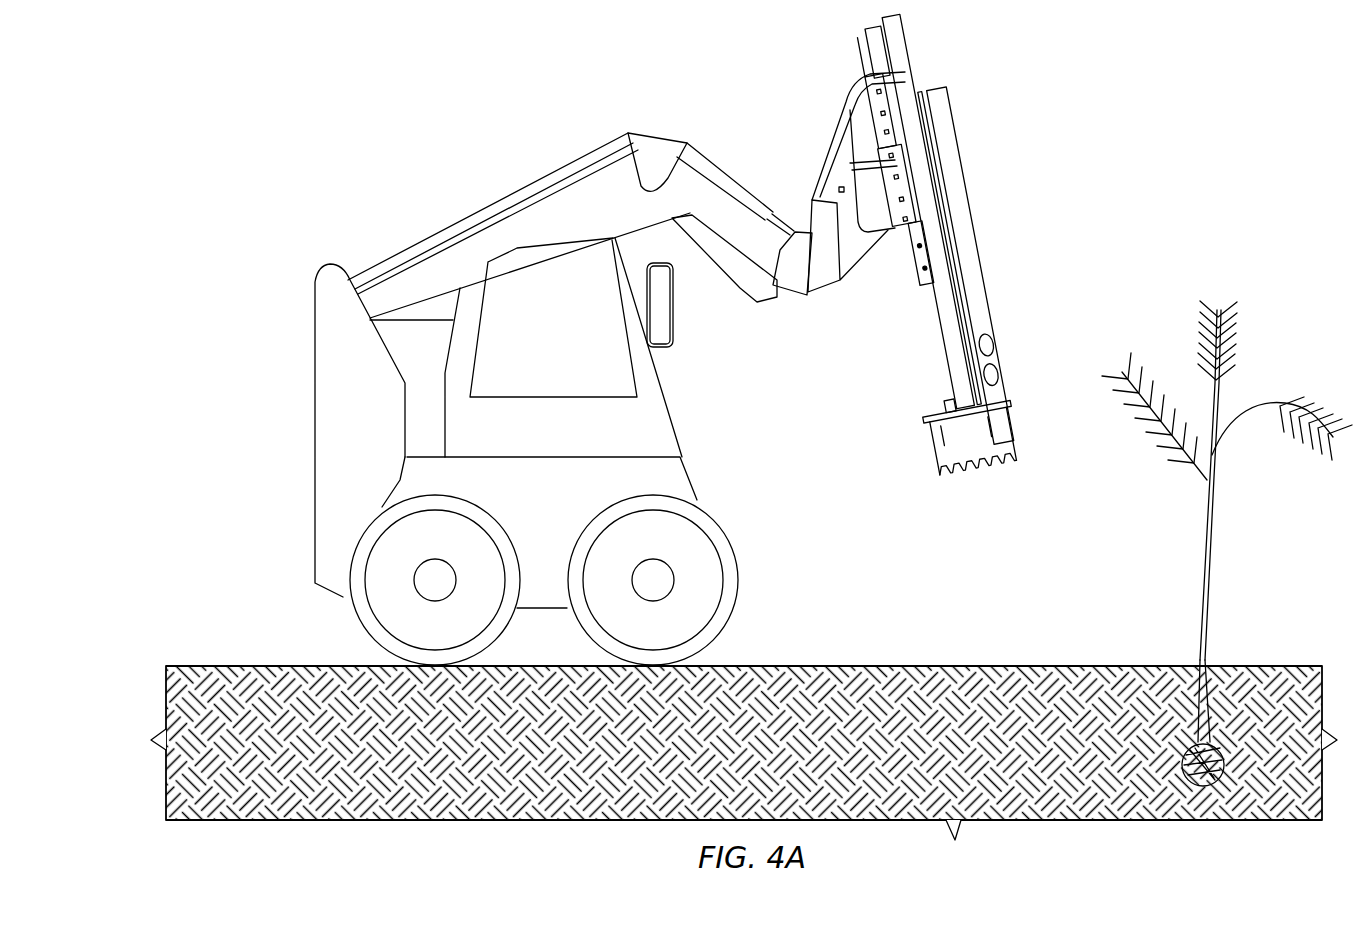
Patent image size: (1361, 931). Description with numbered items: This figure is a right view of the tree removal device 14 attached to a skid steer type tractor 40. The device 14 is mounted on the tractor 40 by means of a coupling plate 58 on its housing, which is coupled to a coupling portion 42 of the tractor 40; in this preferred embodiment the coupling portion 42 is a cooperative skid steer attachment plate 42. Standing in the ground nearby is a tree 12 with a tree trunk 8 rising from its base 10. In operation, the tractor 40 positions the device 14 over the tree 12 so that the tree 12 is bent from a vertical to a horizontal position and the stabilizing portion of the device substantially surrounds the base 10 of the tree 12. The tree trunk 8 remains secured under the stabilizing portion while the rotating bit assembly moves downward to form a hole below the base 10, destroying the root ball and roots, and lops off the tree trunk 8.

The tree trunk 8 is at (1207, 595).
The base 10 is at (1203, 660).
The tree 12 is at (1227, 543).
The tree removal device 14 is at (983, 206).
The tractor 40 is at (405, 237).
The coupling portion 42 is at (810, 290).
The coupling plate 58 is at (833, 268).